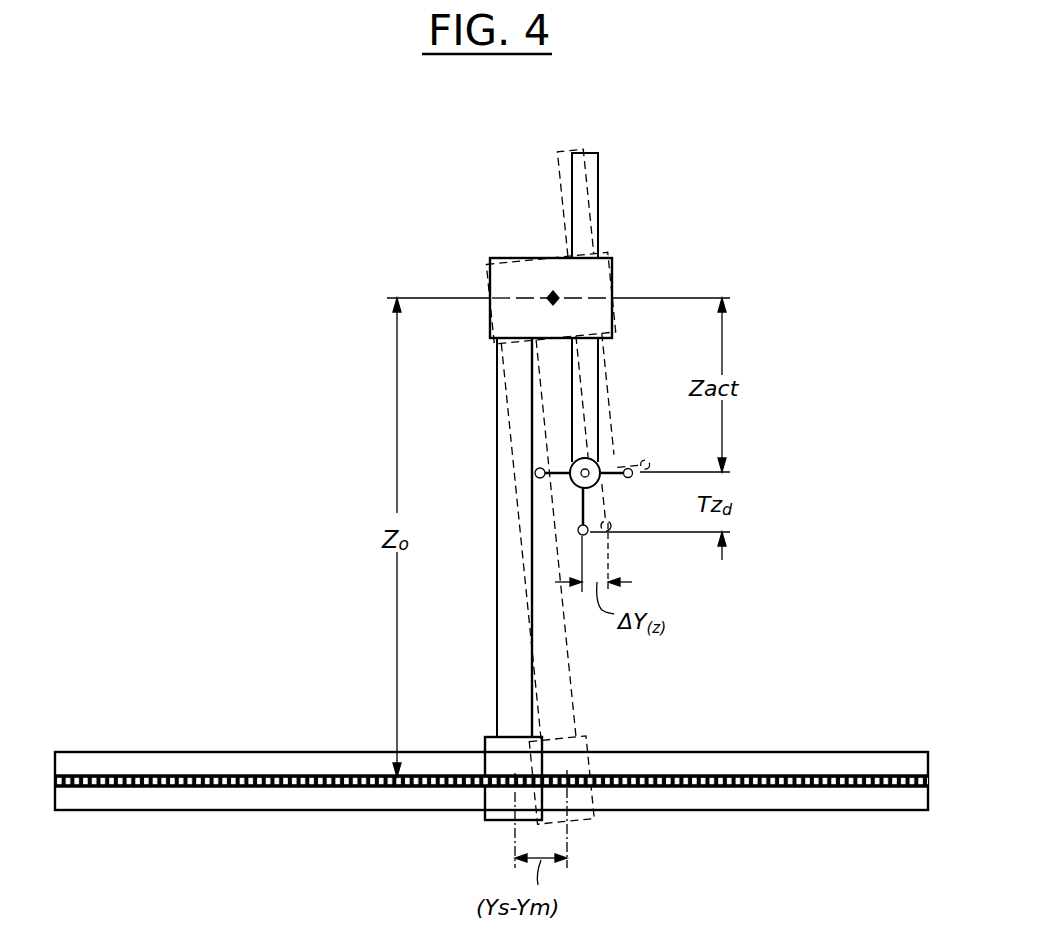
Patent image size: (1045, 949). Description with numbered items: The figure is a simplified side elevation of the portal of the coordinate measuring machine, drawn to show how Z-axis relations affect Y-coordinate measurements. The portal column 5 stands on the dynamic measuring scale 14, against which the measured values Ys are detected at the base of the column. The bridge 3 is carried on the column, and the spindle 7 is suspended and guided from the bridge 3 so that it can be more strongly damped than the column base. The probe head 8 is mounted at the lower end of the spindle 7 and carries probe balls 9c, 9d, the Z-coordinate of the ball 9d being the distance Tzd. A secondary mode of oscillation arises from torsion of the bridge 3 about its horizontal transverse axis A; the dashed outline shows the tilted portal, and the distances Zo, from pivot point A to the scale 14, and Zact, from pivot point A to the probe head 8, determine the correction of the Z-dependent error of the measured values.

The bridge 3 is at (490, 296).
The horizontal transversely extending axis A is at (553, 291).
The portal column 5 is at (497, 678).
The spindle 7 is at (585, 371).
The probe head 8 is at (590, 456).
The probe ball 9c is at (645, 462).
The probe ball 9d is at (578, 530).
The dynamic measuring scale 14 is at (746, 775).